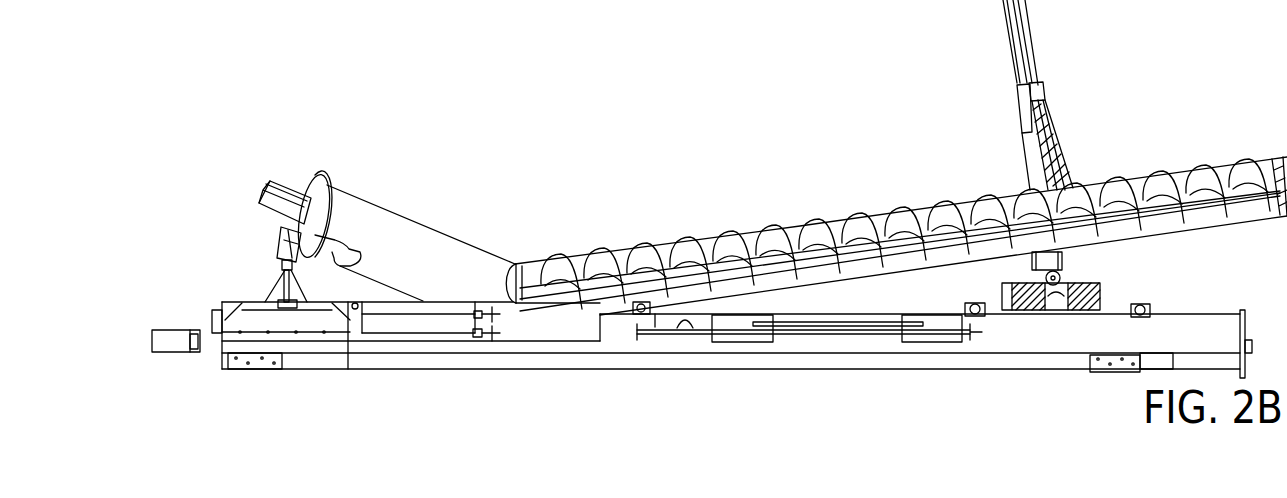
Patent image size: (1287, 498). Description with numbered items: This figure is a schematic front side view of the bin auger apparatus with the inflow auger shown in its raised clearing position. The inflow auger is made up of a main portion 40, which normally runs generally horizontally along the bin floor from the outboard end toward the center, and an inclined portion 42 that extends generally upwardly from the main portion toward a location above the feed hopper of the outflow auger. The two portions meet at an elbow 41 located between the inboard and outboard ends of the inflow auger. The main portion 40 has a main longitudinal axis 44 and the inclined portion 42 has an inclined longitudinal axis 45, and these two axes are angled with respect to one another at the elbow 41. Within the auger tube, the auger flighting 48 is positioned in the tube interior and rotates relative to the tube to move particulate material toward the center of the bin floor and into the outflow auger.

The main portion 40 is at (698, 218).
The elbow 41 is at (520, 250).
The inclined portion 42 is at (450, 212).
The main longitudinal axis 44 is at (1286, 142).
The inclined longitudinal axis 45 is at (213, 168).
The auger flighting 48 is at (776, 236).